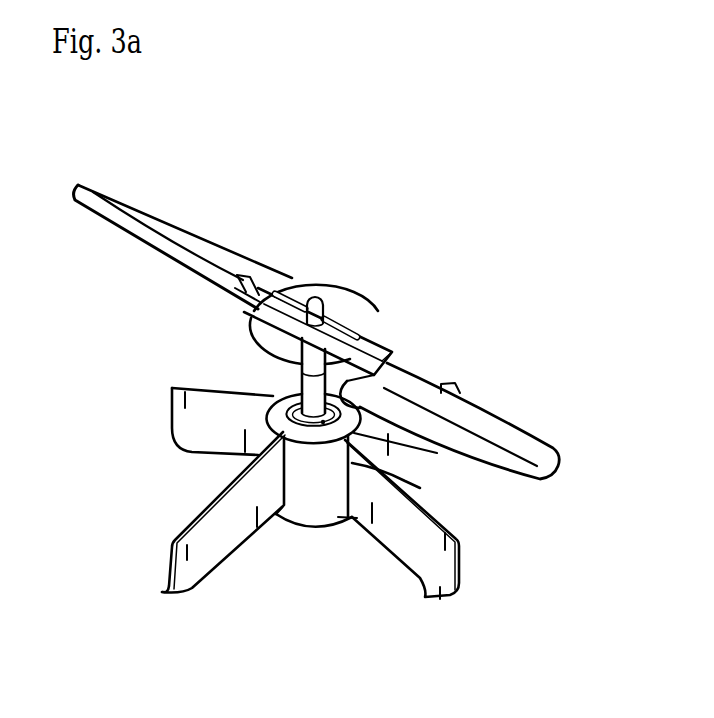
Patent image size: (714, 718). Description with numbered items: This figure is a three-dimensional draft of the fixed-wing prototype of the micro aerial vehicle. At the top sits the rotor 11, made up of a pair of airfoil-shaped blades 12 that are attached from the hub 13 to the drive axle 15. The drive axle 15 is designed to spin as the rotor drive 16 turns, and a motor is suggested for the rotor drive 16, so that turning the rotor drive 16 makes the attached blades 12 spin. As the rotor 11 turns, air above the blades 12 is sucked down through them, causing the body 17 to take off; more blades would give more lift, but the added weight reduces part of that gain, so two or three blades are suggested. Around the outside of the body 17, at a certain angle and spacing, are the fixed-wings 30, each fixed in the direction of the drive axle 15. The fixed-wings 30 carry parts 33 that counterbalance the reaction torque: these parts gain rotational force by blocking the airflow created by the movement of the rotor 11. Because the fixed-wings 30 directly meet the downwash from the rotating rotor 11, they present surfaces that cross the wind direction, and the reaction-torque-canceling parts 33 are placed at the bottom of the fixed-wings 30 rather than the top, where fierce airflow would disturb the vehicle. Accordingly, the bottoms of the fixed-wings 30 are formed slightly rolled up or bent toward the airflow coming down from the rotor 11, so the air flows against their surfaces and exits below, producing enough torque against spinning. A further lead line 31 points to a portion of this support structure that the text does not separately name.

The rotor 11 is at (317, 290).
The blades 12 is at (135, 212).
The hub 13 is at (376, 347).
The drive axle 15 is at (282, 392).
The rotor drive 16 is at (316, 426).
The body 17 is at (345, 520).
The fixed-wings 30 is at (320, 533).
The support fin 31 is at (420, 488).
The reaction torque counterbalancing parts 33 is at (174, 594).